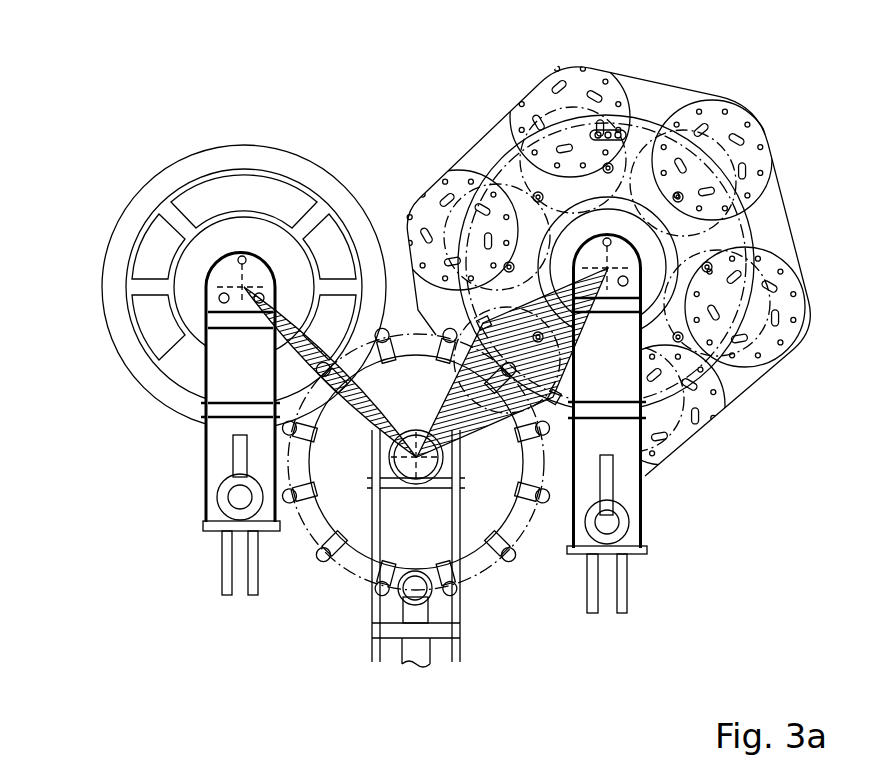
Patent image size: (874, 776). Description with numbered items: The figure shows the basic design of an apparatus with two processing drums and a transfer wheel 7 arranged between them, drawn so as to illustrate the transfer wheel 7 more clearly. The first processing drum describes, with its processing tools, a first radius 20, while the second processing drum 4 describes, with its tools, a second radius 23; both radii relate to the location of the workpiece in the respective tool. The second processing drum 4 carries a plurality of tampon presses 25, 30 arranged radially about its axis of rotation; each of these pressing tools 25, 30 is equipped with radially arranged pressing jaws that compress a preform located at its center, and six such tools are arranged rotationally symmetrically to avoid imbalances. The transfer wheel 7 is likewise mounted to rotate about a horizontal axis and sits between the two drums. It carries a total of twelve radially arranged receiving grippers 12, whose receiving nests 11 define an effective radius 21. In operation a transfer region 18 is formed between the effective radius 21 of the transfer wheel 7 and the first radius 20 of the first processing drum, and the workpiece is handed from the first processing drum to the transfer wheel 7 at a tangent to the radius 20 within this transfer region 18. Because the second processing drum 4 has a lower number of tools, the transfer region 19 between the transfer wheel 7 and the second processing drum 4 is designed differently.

The second processing drum 4 is at (706, 250).
The transfer wheel 7 is at (477, 497).
The receiving nests 11 is at (543, 500).
The receiving grippers 12 is at (292, 513).
The transfer region 18 is at (285, 410).
The transfer region 19 is at (568, 328).
The first radius 20 is at (128, 293).
The effective radius 21 is at (312, 572).
The second radius 23 is at (635, 126).
The tampon press 25 is at (586, 110).
The tampon press 30 is at (787, 355).